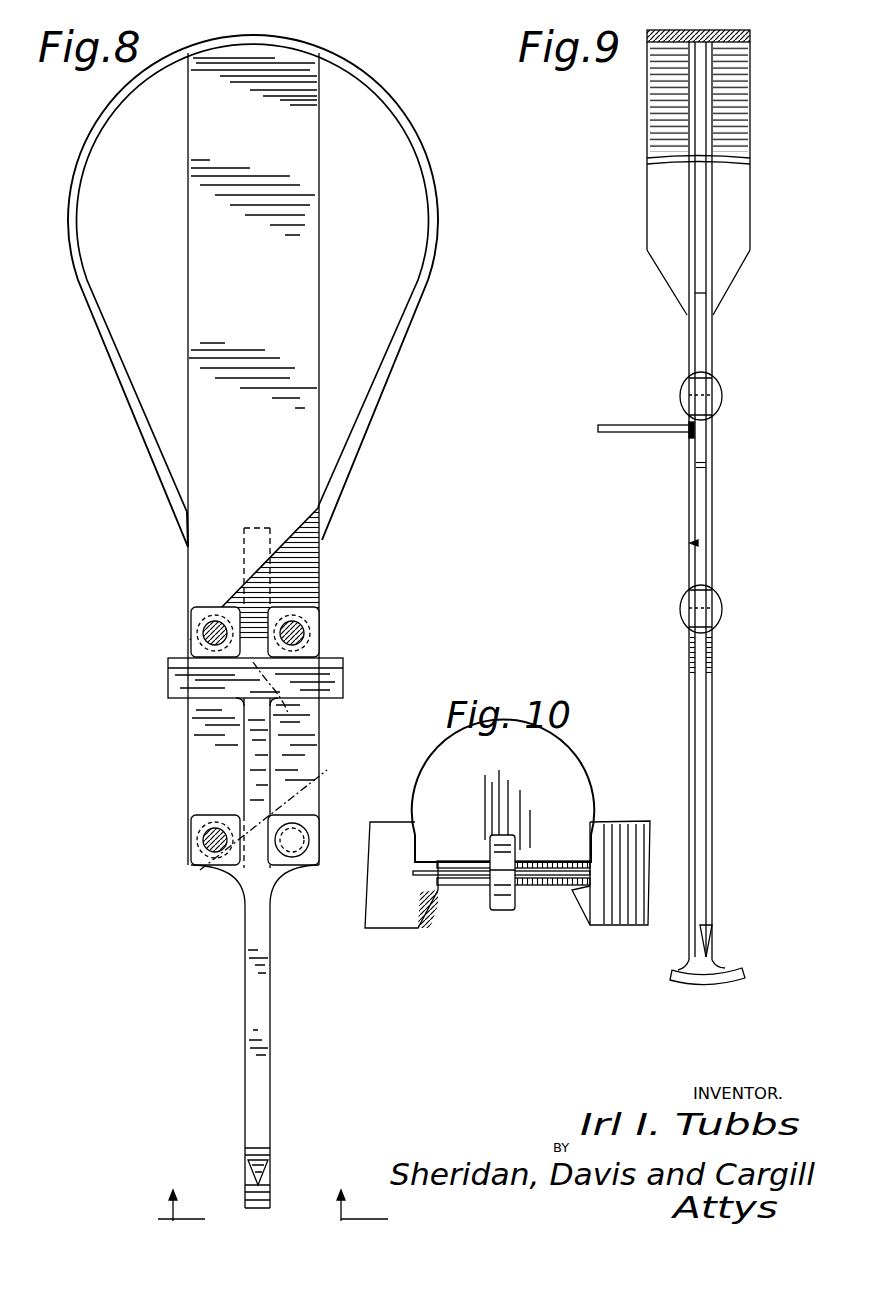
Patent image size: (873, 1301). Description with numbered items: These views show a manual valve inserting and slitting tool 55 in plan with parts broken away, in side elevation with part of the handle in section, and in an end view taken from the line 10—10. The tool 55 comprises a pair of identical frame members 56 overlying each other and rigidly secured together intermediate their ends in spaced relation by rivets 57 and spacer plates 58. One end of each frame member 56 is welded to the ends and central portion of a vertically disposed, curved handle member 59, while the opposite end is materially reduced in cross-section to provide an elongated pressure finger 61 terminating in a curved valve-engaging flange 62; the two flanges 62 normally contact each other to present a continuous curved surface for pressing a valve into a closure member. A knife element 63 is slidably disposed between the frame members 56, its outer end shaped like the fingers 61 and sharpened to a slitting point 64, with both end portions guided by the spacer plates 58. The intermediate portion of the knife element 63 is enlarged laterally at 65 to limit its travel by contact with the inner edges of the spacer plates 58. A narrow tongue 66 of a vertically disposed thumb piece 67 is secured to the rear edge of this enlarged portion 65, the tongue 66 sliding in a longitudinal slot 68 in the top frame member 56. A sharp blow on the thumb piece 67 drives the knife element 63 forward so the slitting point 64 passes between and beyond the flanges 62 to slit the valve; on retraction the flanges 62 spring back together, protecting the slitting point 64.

In FIG. 8, the slitting and inserting tool 55 is at (186, 549).
In FIG. 9, the slitting and inserting tool 55 is at (717, 433).
In FIG. 8, the frame members 56 is at (205, 766).
In FIG. 9, the frame members 56 is at (690, 213).
In FIG. 10, the frame members 56 is at (455, 868).
In FIG. 8, the rivets 57 is at (290, 621).
In FIG. 9, the rivets 57 is at (716, 391).
In FIG. 8, the spacer plates 58 is at (318, 612).
In FIG. 9, the spacer plates 58 is at (697, 379).
In FIG. 8, the handle member 59 is at (303, 231).
In FIG. 9, the handle member 59 is at (660, 113).
In FIG. 10, the handle member 59 is at (395, 915).
In FIG. 8, the pressure finger 61 is at (227, 1056).
In FIG. 9, the pressure finger 61 is at (694, 708).
In FIG. 8, the valve-engaging flange 62 is at (247, 1202).
In FIG. 9, the valve-engaging flange 62 is at (730, 970).
In FIG. 10, the valve-engaging flange 62 is at (503, 838).
In FIG. 8, the knife element 63 is at (265, 776).
In FIG. 9, the knife element 63 is at (690, 544).
In FIG. 10, the knife element 63 is at (565, 786).
In FIG. 8, the slitting point 64 is at (268, 1171).
In FIG. 9, the slitting point 64 is at (710, 936).
In FIG. 8, the enlarged intermediate portion 65 is at (168, 689).
In FIG. 9, the enlarged intermediate portion 65 is at (703, 446).
In FIG. 10, the enlarged intermediate portion 65 is at (415, 875).
In FIG. 8, the tongue 66 is at (281, 698).
In FIG. 9, the tongue 66 is at (690, 438).
In FIG. 8, the thumb piece 67 is at (340, 664).
In FIG. 9, the thumb piece 67 is at (615, 425).
In FIG. 10, the thumb piece 67 is at (455, 796).
In FIG. 9, the longitudinal slot 68 is at (695, 463).
In FIG. 10, the longitudinal slot 68 is at (495, 858).
In FIG. 8, the section line 10— 10 is at (271, 1195).